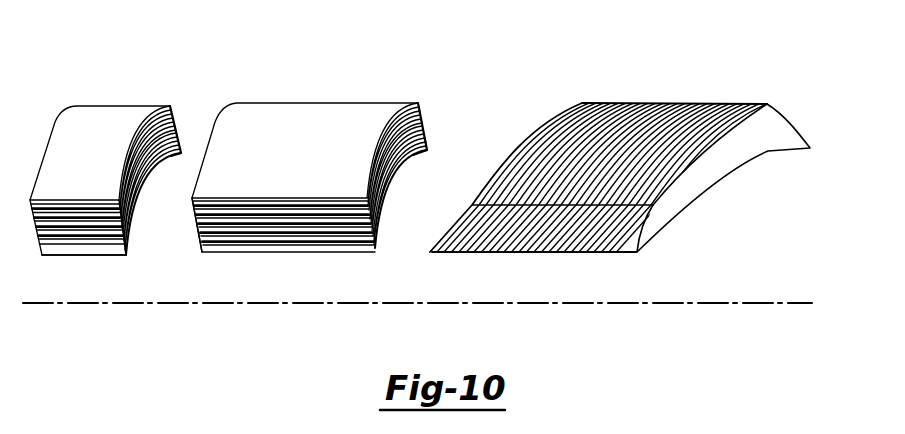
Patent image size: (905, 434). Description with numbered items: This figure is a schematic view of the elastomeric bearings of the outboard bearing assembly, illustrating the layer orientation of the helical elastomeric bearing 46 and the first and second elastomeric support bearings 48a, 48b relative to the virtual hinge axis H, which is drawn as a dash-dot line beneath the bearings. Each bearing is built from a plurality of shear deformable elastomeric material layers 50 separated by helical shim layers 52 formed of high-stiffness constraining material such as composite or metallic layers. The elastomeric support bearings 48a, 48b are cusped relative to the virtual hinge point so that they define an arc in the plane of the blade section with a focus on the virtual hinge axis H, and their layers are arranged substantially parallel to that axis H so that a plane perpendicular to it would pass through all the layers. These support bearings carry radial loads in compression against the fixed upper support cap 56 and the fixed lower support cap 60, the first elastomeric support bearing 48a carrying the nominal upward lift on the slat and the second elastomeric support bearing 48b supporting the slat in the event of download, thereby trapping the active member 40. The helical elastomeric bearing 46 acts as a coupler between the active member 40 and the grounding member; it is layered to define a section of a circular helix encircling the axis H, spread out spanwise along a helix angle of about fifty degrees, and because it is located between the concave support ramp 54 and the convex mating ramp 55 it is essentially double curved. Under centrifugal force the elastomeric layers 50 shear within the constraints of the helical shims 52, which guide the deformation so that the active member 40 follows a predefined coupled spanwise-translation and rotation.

The active member 40 is at (180, 108).
The helical elastomeric bearing 46 is at (606, 154).
The first elastomeric support bearing 48a is at (338, 131).
The second elastomeric support bearing 48b is at (333, 160).
The shear deformable elastomeric material layers 50 is at (194, 249).
The helical shim layers 52 is at (198, 232).
The concave support ramp 54 is at (630, 254).
The convex mating ramp 55 is at (431, 254).
The fixed upper support cap 56 is at (420, 105).
The fixed lower support cap 60 is at (58, 258).
The virtual hinge axis H is at (629, 304).